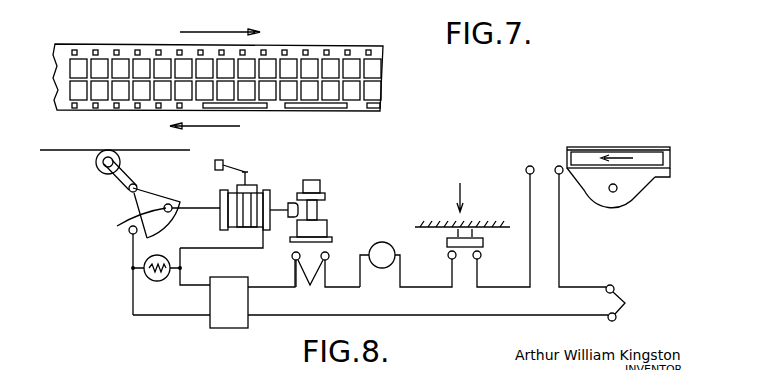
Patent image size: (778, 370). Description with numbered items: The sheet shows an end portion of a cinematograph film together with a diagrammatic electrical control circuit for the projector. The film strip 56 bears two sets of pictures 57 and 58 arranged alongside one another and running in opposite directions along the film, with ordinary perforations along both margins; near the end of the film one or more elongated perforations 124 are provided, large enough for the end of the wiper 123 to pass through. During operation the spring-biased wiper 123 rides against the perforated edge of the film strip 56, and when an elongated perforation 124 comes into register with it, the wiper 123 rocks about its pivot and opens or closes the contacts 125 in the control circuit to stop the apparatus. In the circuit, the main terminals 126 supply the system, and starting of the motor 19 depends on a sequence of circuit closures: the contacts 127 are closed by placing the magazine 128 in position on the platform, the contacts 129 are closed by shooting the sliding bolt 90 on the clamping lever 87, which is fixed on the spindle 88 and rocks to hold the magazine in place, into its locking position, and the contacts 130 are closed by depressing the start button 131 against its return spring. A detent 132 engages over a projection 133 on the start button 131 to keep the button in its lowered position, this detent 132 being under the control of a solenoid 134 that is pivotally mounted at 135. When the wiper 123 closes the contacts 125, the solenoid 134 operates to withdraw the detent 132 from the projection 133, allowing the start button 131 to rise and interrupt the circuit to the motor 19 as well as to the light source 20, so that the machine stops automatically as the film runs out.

In FIG. 7, the film strip 56 is at (78, 50).
In FIG. 8, the film strip 56 is at (64, 152).
In FIG. 7, the set of pictures 57 is at (388, 73).
In FIG. 7, the set of pictures 58 is at (388, 97).
In FIG. 7, the elongated perforation 124 is at (286, 108).
In FIG. 8, the wiper 123 is at (124, 184).
In FIG. 8, the contacts 125 is at (129, 230).
In FIG. 8, the light source 20 is at (147, 277).
In FIG. 8, the solenoid 134 is at (228, 216).
In FIG. 8, the pivot 135 is at (242, 164).
In FIG. 8, the detent 132 is at (288, 204).
In FIG. 8, the start button 131 is at (320, 186).
In FIG. 8, the projection 133 is at (322, 198).
In FIG. 8, the contacts 130 is at (326, 281).
In FIG. 8, the motor 19 is at (378, 247).
In FIG. 8, the magazine 128 is at (442, 221).
In FIG. 8, the contacts 127 is at (477, 259).
In FIG. 8, the contacts 129 is at (557, 166).
In FIG. 8, the sliding bolt 90 is at (592, 155).
In FIG. 8, the clamping lever 87 is at (642, 190).
In FIG. 8, the spindle 88 is at (612, 192).
In FIG. 8, the main terminals 126 is at (632, 303).